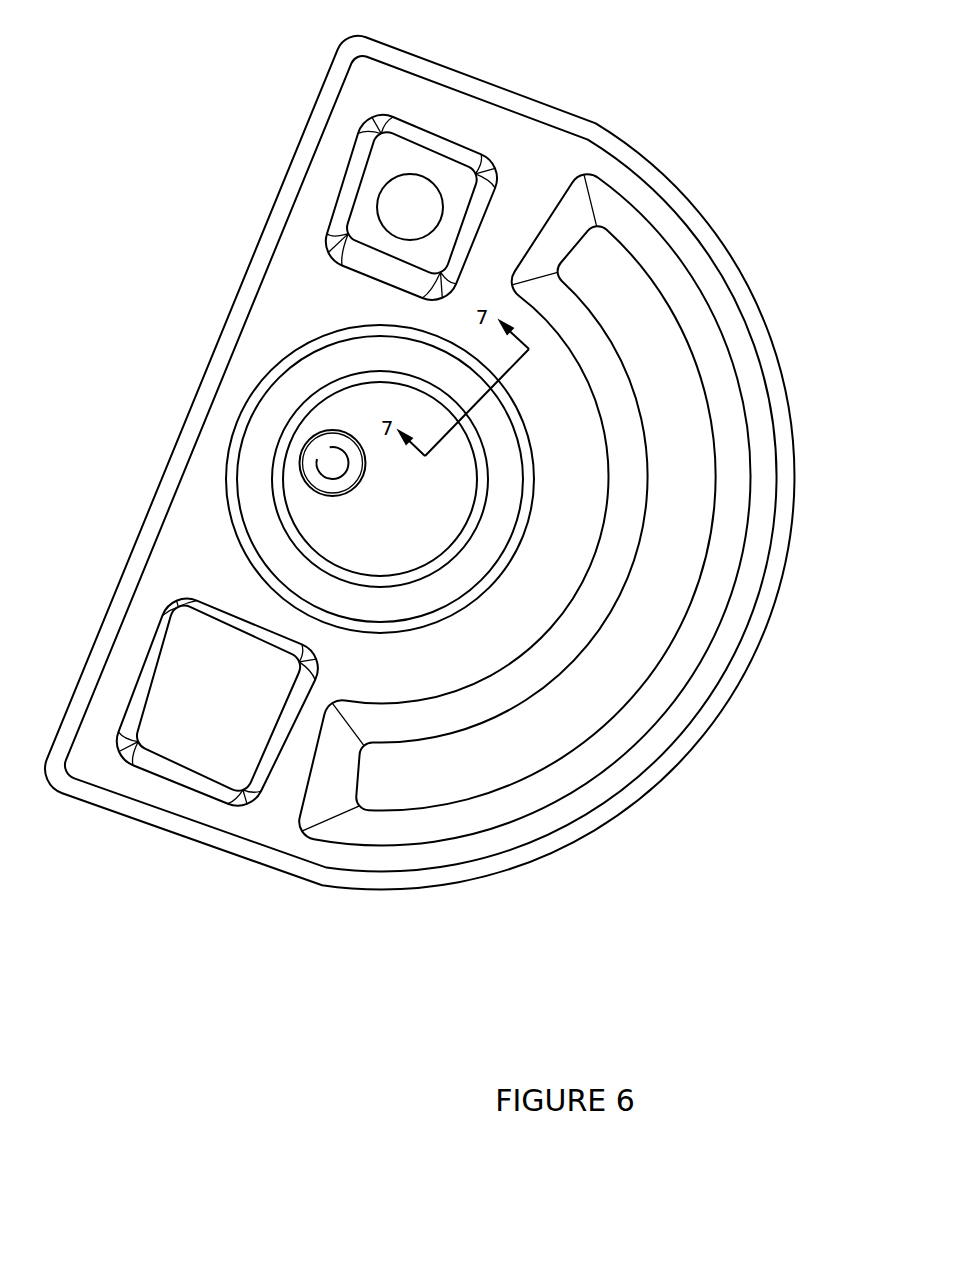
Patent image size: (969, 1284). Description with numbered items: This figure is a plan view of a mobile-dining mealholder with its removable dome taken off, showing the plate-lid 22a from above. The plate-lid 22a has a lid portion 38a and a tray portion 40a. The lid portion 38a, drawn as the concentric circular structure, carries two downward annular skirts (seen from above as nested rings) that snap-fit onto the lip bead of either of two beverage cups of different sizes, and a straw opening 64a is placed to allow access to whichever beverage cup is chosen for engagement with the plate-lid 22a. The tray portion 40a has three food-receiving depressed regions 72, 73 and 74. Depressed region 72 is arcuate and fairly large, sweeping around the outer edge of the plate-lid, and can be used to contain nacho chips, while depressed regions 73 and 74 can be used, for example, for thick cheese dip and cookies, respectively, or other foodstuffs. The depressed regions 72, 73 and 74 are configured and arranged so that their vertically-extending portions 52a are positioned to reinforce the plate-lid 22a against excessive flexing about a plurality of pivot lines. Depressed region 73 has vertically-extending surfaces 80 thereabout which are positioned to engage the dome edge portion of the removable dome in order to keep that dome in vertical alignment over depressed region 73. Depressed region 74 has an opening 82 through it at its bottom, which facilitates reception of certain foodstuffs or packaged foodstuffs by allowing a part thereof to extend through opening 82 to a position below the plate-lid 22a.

The plate-lid 22a is at (419, 463).
The lid portion 38a is at (380, 479).
The tray portion 40a is at (535, 518).
The vertically-extending portions 52a is at (421, 463).
The straw opening 64a is at (333, 463).
The food-receiving depressed region 72 is at (524, 509).
The food-receiving depressed region 73 is at (218, 702).
The food-receiving depressed region 74 is at (411, 207).
The vertically-extending surfaces 80 is at (217, 702).
The opening 82 is at (410, 207).